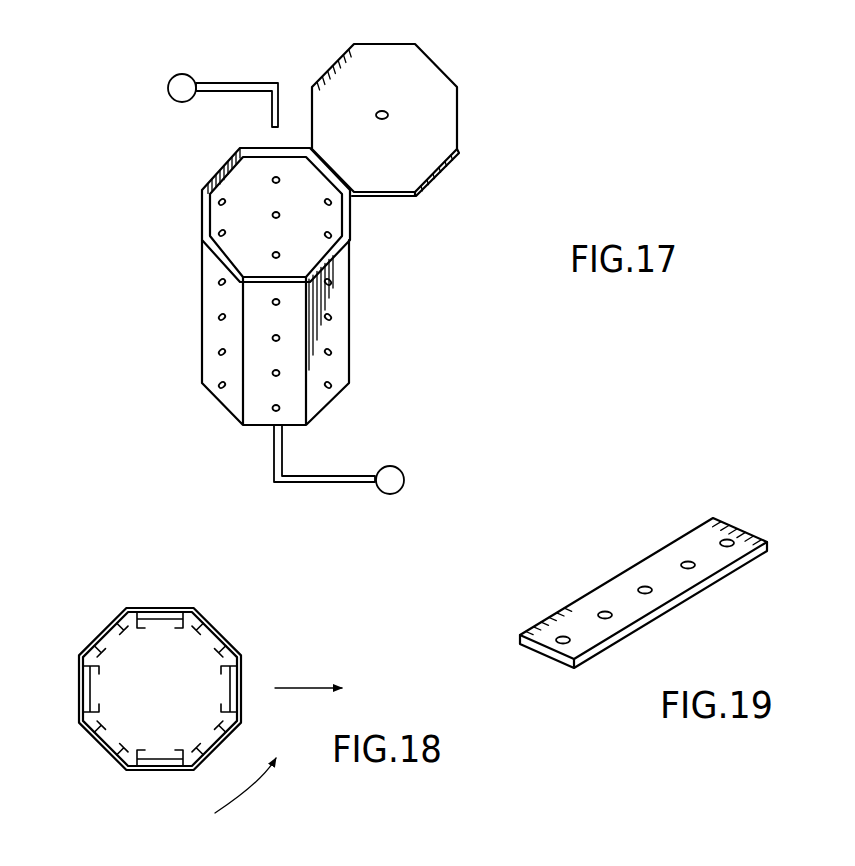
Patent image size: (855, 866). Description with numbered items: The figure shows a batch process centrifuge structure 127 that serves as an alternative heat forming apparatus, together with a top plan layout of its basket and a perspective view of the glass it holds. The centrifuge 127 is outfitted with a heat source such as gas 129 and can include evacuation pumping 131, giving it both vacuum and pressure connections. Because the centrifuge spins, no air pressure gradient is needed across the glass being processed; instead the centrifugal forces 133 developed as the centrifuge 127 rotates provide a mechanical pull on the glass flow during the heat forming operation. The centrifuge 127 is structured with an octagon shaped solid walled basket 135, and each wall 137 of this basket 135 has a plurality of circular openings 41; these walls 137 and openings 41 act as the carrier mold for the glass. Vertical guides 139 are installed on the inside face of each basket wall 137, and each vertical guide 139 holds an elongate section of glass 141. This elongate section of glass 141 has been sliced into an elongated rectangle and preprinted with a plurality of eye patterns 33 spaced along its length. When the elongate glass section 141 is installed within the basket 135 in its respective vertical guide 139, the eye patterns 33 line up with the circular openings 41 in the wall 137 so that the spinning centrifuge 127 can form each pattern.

In FIG. 17, the centrifuge structure 127 is at (304, 263).
In FIG. 18, the centrifuge structure 127 is at (164, 685).
In FIG. 17, the octagon shaped solid walled basket 135 is at (215, 172).
In FIG. 18, the octagon shaped solid walled basket 135 is at (100, 637).
In FIG. 17, the wall 137 is at (265, 415).
In FIG. 17, the circular openings 41 is at (218, 317).
In FIG. 17, the evacuation pumping 131 is at (225, 82).
In FIG. 17, the gas heat source 129 is at (404, 474).
In FIG. 18, the vertical guides 139 is at (164, 607).
In FIG. 18, the centrifugal forces 133 is at (302, 688).
In FIG. 19, the elongate section of glass 141 is at (722, 525).
In FIG. 19, the eye patterns 33 is at (562, 635).